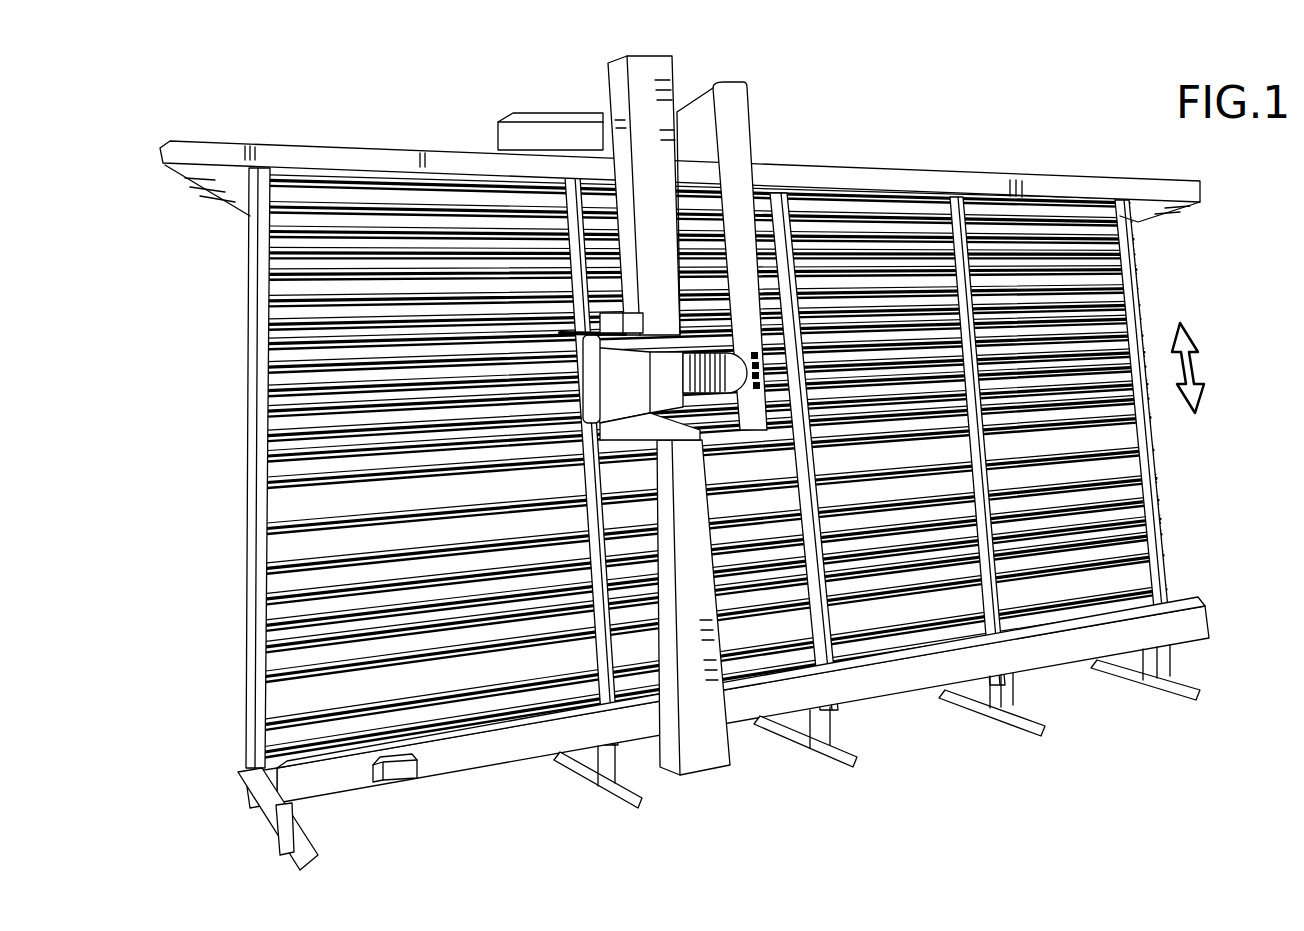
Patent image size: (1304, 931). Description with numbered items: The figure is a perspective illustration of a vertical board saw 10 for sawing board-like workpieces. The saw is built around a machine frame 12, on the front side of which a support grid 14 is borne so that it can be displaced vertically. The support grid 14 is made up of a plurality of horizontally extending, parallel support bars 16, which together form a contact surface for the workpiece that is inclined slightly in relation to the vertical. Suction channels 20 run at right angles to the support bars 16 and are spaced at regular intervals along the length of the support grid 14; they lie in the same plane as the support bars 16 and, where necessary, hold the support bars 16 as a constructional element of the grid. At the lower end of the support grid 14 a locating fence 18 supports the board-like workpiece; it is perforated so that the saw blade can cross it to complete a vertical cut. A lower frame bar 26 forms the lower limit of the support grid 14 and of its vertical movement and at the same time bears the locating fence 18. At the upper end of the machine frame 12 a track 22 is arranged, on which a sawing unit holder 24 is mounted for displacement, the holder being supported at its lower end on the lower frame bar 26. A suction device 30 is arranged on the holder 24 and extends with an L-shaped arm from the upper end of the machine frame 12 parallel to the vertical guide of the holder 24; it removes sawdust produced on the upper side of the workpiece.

The board saw 10 is at (716, 444).
The machine frame 12 is at (716, 464).
The support grid 14 is at (721, 466).
The support bars 16 is at (1080, 277).
The locating fence 18 is at (467, 753).
The suction channels 20 is at (570, 177).
The track 22 is at (197, 155).
The sawing unit holder 24 is at (680, 62).
The lower frame bar 26 is at (340, 780).
The suction device 30 is at (732, 113).